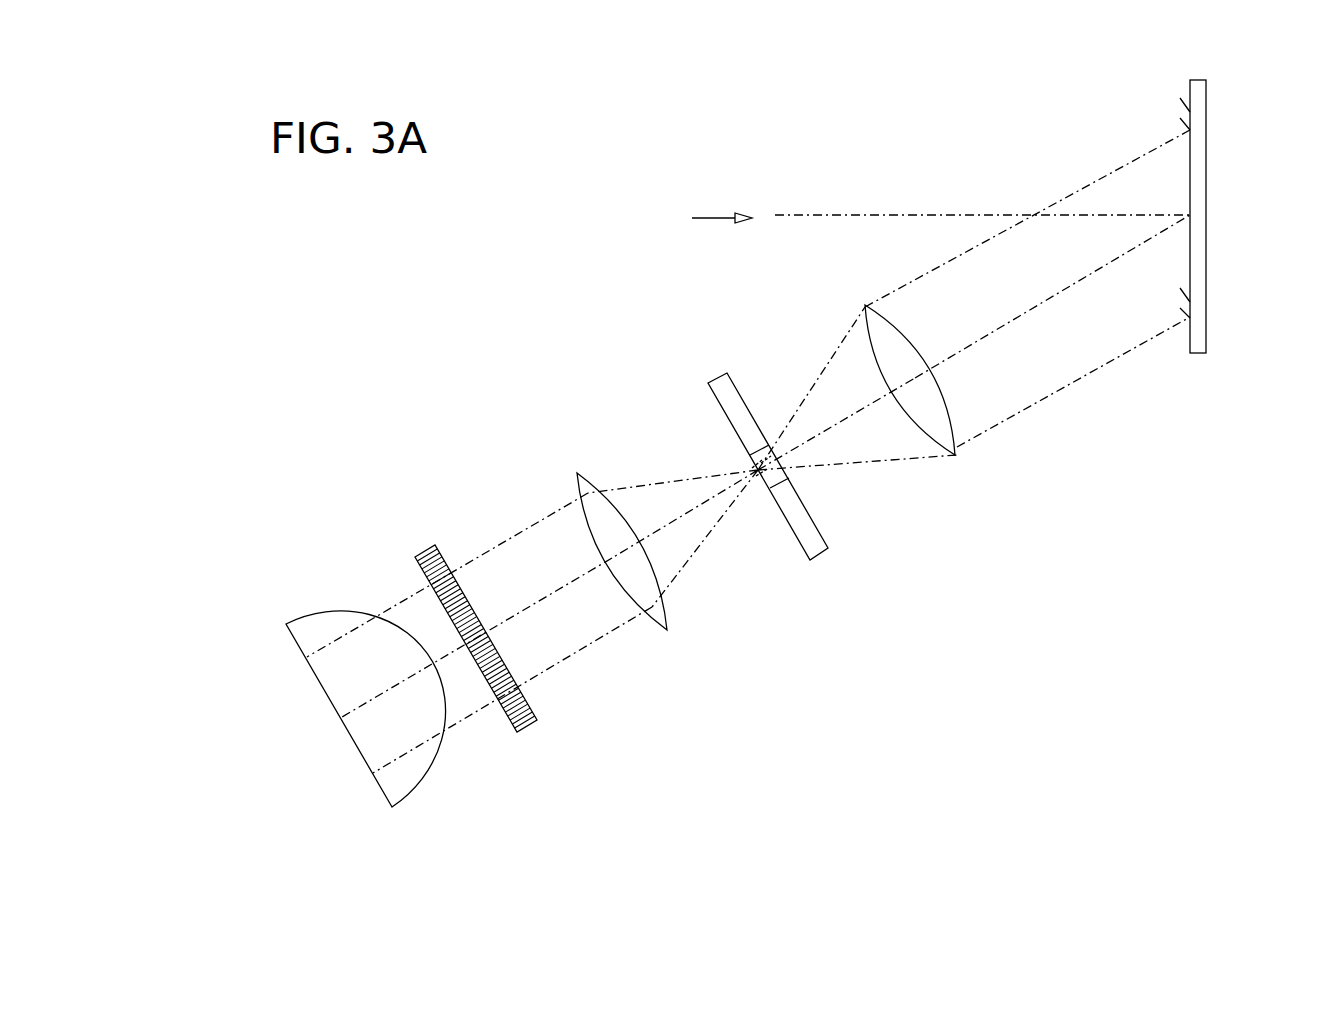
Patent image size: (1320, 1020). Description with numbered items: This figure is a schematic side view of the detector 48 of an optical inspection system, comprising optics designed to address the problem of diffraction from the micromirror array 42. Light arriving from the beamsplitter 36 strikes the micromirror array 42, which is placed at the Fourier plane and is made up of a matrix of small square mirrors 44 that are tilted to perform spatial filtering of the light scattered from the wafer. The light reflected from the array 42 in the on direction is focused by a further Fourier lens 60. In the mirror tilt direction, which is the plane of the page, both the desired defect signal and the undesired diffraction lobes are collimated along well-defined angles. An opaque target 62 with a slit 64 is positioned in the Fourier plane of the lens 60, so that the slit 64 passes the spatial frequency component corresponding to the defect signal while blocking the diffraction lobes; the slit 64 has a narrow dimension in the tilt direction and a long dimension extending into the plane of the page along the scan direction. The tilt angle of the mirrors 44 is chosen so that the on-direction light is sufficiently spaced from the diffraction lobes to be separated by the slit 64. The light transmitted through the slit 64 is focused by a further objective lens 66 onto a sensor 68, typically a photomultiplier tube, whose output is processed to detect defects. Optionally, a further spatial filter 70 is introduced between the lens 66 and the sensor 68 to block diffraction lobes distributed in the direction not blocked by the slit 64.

The beamsplitter 36 is at (620, 213).
The micromirror array 42 is at (1206, 100).
The mirrors 44 is at (1185, 120).
The detector 48 is at (1048, 522).
The Fourier lens 60 is at (957, 456).
The opaque target 62 is at (820, 530).
The slit 64 is at (757, 478).
The objective lens 66 is at (667, 628).
The sensor 68 is at (355, 806).
The spatial filter 70 is at (531, 700).